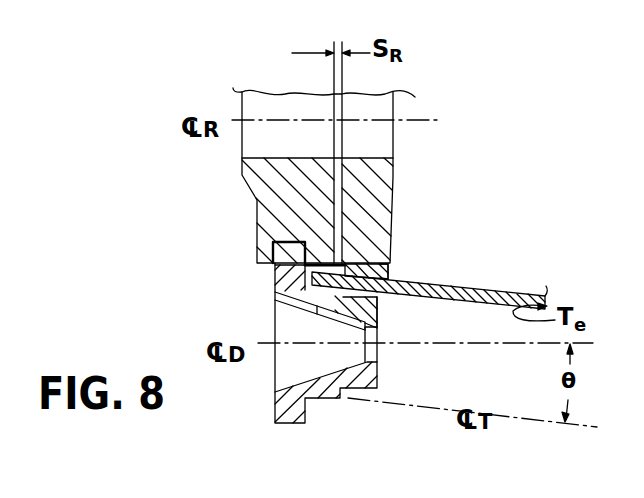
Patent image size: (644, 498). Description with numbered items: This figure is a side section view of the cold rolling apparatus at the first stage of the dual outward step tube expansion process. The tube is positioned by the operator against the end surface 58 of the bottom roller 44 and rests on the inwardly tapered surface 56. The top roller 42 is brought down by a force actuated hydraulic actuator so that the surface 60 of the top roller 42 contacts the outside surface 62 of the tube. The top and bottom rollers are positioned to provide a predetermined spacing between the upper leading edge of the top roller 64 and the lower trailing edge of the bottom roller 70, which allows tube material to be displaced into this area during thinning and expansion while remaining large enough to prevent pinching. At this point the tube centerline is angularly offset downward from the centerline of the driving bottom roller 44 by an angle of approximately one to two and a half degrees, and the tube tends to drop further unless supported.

The top roller 42 is at (265, 227).
The bottom roller 44 is at (285, 400).
The inwardly tapered surface 56 is at (278, 313).
The end surface 58 is at (309, 264).
The surface of the top roller 60 is at (385, 272).
The outside surface of the tube 62 is at (489, 292).
The upper leading edge of the top roller 64 is at (360, 272).
The lower trailing edge of the bottom roller 70 is at (373, 303).